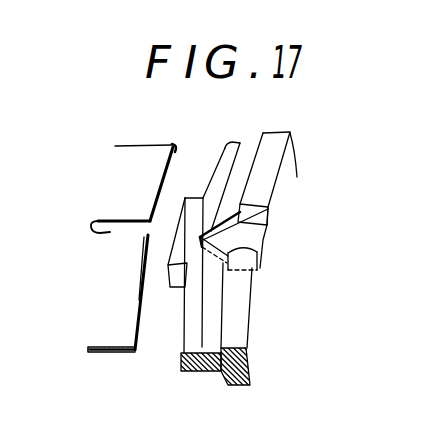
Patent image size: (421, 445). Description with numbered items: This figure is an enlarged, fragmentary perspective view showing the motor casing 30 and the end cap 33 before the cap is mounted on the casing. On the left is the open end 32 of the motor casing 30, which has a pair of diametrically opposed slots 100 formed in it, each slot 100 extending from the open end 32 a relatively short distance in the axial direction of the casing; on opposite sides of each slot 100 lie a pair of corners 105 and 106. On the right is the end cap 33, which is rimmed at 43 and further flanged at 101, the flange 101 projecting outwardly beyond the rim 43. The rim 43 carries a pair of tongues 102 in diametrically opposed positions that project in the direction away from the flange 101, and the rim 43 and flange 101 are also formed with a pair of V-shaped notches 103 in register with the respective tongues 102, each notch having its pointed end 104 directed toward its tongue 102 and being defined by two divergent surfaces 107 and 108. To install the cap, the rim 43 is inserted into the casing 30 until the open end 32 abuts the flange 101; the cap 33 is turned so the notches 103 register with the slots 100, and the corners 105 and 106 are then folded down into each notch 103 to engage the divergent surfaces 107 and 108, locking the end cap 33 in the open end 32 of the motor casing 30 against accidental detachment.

The motor casing 30 is at (131, 158).
The open end 32 is at (175, 147).
The end cap 33 is at (250, 351).
The rim 43 is at (204, 343).
The slots 100 is at (108, 229).
The flange 101 is at (276, 145).
The tongues 102 is at (198, 197).
The V-shaped notches 103 is at (256, 244).
The pointed ends 104 is at (185, 288).
The corner 105 is at (138, 240).
The corner 106 is at (142, 214).
The divergent surface 107 is at (268, 214).
The divergent surface 108 is at (252, 254).